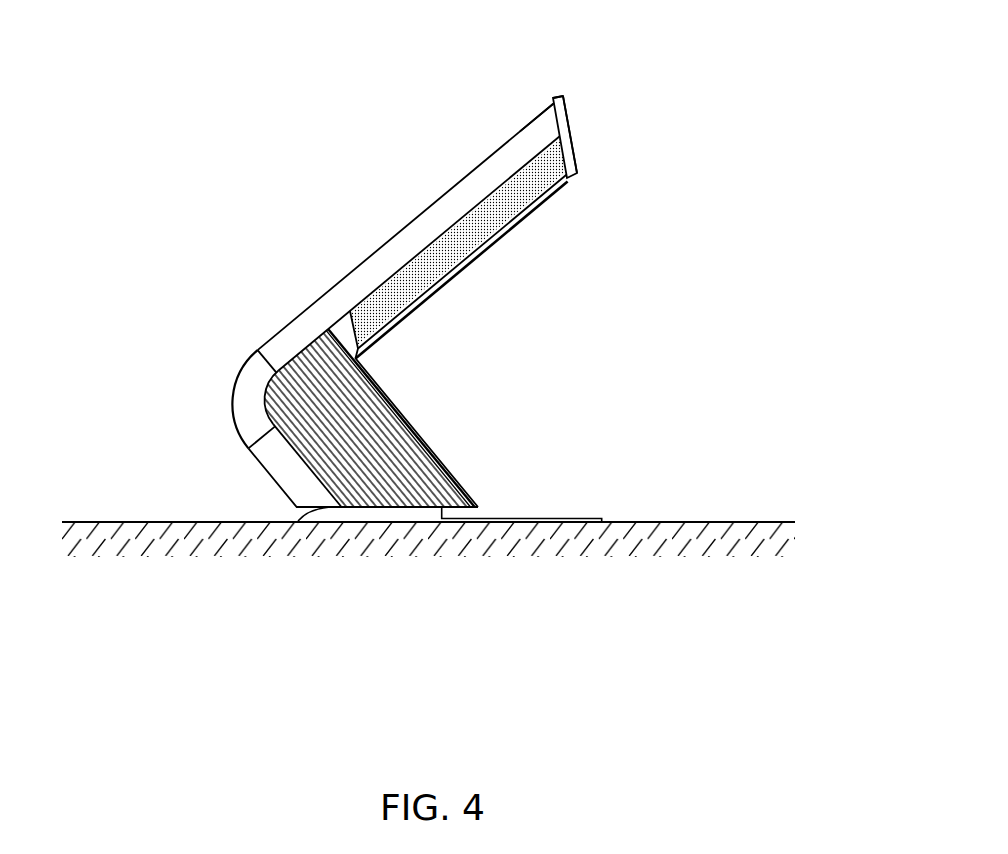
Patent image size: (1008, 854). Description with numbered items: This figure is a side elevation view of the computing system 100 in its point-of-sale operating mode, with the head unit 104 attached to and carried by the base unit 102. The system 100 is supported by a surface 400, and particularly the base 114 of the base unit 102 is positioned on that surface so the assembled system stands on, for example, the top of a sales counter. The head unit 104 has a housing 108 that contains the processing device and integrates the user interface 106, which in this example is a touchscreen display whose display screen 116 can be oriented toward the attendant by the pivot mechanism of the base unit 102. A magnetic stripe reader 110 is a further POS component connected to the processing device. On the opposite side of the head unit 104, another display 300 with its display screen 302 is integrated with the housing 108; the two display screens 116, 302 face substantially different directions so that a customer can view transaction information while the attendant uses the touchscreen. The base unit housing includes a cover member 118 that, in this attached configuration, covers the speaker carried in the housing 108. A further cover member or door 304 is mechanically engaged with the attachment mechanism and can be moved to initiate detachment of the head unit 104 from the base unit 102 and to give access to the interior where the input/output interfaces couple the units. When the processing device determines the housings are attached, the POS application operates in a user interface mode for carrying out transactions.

The computing system 100 is at (217, 124).
The base unit 102 is at (271, 477).
The head unit 104 is at (288, 326).
The user interface 106 is at (495, 150).
The housing 108 is at (553, 103).
The magnetic stripe reader 110 is at (563, 98).
The base 114 is at (590, 517).
The display screen 116 is at (415, 219).
The cover member 118 is at (233, 392).
The display 300 is at (565, 103).
The display screen 302 is at (573, 134).
The cover member or door 304 is at (438, 458).
The surface 400 is at (117, 523).